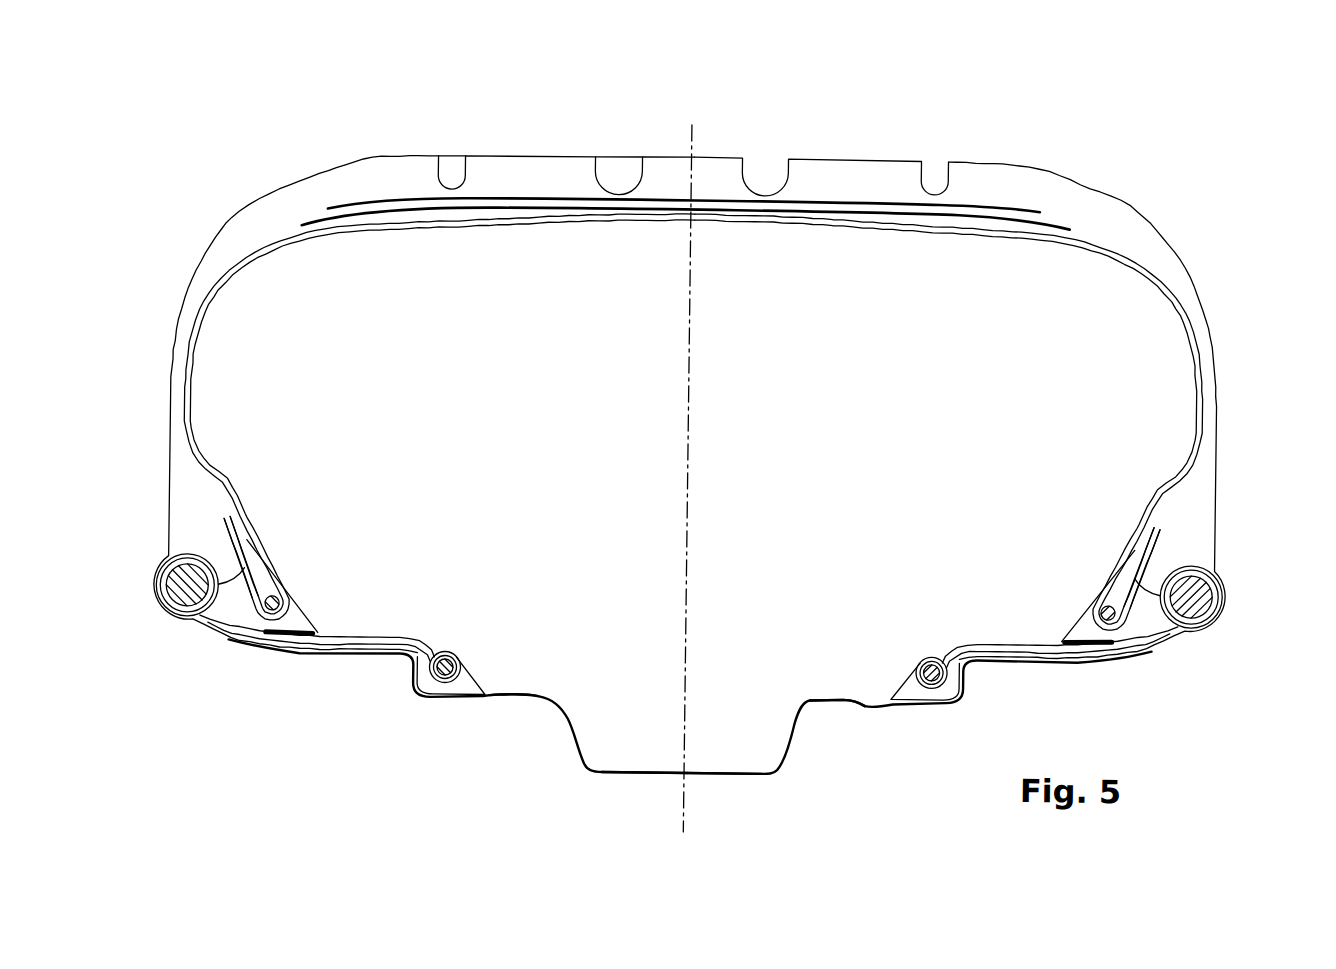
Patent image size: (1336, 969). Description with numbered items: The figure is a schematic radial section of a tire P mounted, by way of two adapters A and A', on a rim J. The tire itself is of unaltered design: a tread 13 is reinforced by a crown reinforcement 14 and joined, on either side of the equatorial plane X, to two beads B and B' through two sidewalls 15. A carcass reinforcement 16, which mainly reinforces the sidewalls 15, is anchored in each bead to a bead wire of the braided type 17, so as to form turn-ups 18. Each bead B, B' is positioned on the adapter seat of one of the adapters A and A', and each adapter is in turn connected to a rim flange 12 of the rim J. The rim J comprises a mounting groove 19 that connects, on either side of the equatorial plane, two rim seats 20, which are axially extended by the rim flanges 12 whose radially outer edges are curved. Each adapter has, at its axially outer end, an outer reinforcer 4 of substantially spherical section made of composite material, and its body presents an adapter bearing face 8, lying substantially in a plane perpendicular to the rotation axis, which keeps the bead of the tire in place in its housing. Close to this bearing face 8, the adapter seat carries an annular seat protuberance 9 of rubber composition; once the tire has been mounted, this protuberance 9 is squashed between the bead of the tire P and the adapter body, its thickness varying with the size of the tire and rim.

The tread 13 is at (540, 167).
The crown reinforcement 14 is at (997, 193).
The sidewalls 15 is at (173, 384).
The carcass reinforcement 16 is at (226, 489).
The adapter bearing face 8 is at (263, 545).
The turn-ups 18 is at (261, 592).
The braided bead wire 17 is at (278, 605).
The annular seat protuberance 9 is at (319, 637).
The outer reinforcer 4 is at (1228, 585).
The rim seats 20 is at (540, 697).
The mounting groove 19 is at (733, 770).
The rim flange 12 is at (440, 703).
The tire P is at (365, 141).
The bead B is at (314, 587).
The bead B' is at (1075, 595).
The adapter A is at (316, 693).
The adapter A' is at (1060, 678).
The rim J is at (611, 794).
The equatorial plane X is at (705, 465).